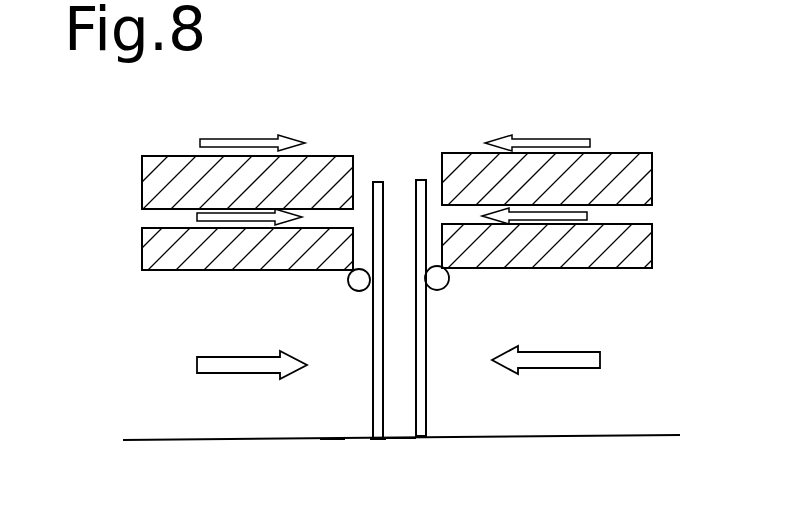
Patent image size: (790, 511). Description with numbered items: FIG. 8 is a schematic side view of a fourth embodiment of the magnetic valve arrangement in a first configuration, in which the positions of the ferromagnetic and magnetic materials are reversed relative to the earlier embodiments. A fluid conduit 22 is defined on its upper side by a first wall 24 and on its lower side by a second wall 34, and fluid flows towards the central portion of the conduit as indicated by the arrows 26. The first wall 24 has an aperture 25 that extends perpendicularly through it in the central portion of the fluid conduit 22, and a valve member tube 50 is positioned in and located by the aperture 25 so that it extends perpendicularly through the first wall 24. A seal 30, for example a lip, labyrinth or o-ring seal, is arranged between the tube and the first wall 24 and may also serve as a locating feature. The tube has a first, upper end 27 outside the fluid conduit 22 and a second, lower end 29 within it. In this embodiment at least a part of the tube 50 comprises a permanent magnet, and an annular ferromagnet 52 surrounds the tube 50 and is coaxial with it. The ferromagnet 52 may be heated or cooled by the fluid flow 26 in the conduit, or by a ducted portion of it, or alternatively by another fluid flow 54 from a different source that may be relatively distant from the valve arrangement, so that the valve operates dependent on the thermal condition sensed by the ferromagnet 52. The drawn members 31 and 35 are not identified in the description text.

The fluid conduit 22 is at (203, 417).
The first wall 24 is at (175, 260).
The aperture 25 is at (360, 245).
The arrows 26 is at (253, 362).
The first end 27 is at (421, 180).
The second end 29 is at (373, 420).
The seal 30 is at (438, 282).
The first lever 31 is at (397, 350).
The second wall 34 is at (332, 438).
The second contact point 35 is at (393, 437).
The tube 50 is at (422, 378).
The annular ferromagnet 52 is at (616, 153).
The another fluid flow 54 is at (243, 135).